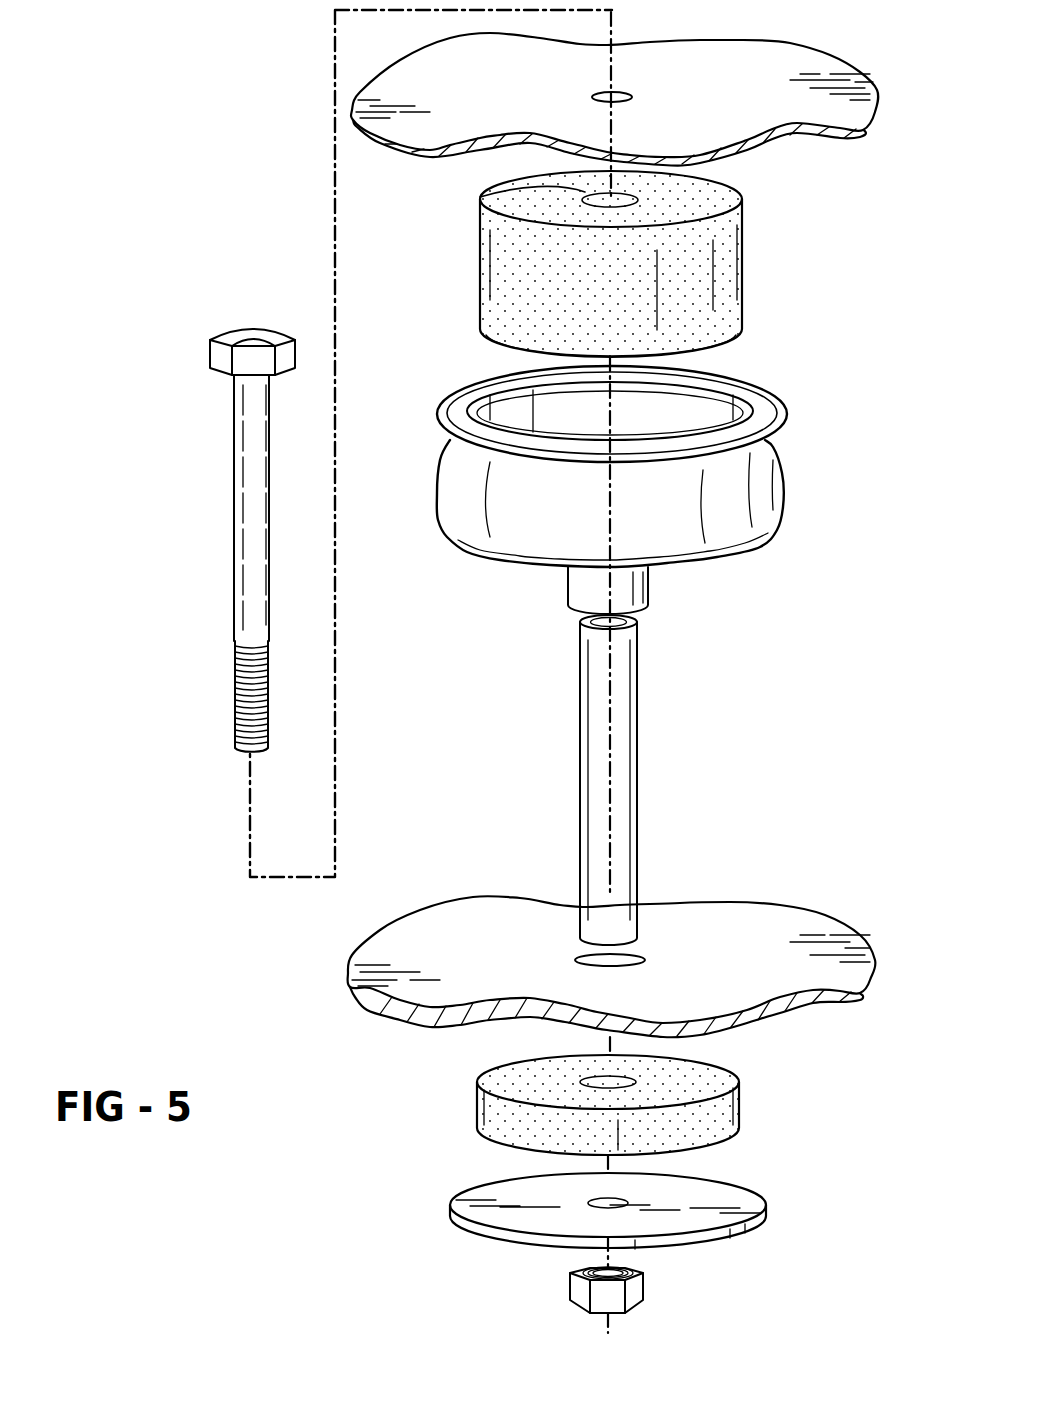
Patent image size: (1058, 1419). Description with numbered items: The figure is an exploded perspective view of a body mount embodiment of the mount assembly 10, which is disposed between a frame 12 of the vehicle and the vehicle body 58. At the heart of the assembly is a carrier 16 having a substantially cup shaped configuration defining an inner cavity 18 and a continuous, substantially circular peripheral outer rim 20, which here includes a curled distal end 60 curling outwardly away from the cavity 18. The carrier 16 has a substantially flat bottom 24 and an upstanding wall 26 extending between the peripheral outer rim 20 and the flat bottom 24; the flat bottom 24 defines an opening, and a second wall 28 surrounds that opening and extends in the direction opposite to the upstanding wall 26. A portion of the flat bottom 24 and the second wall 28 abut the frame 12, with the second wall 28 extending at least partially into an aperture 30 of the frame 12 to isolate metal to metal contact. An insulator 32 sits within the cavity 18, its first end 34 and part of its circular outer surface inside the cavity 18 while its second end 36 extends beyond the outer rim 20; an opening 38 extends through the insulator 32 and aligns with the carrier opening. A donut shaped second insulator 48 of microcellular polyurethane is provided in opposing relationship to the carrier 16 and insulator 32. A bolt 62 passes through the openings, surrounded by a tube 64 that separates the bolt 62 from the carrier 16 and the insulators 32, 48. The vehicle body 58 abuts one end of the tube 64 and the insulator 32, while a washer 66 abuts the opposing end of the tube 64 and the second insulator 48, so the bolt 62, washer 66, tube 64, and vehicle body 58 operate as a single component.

The mount assembly 10 is at (270, 185).
The frame 12 is at (612, 941).
The carrier 16 is at (618, 527).
The inner cavity 18 is at (634, 395).
The peripheral outer rim 20 is at (757, 405).
The flat bottom 24 is at (695, 567).
The upstanding wall 26 is at (470, 497).
The second wall 28 is at (595, 585).
The aperture 30 is at (640, 960).
The insulator 32 is at (619, 255).
The first end 34 is at (718, 352).
The second end 36 is at (700, 192).
The opening 38 is at (480, 197).
The second insulator 48 is at (710, 1128).
The vehicle body 58 is at (712, 52).
The curled distal end 60 is at (482, 382).
The bolt 62 is at (232, 452).
The tube 64 is at (622, 740).
The washer 66 is at (735, 1193).